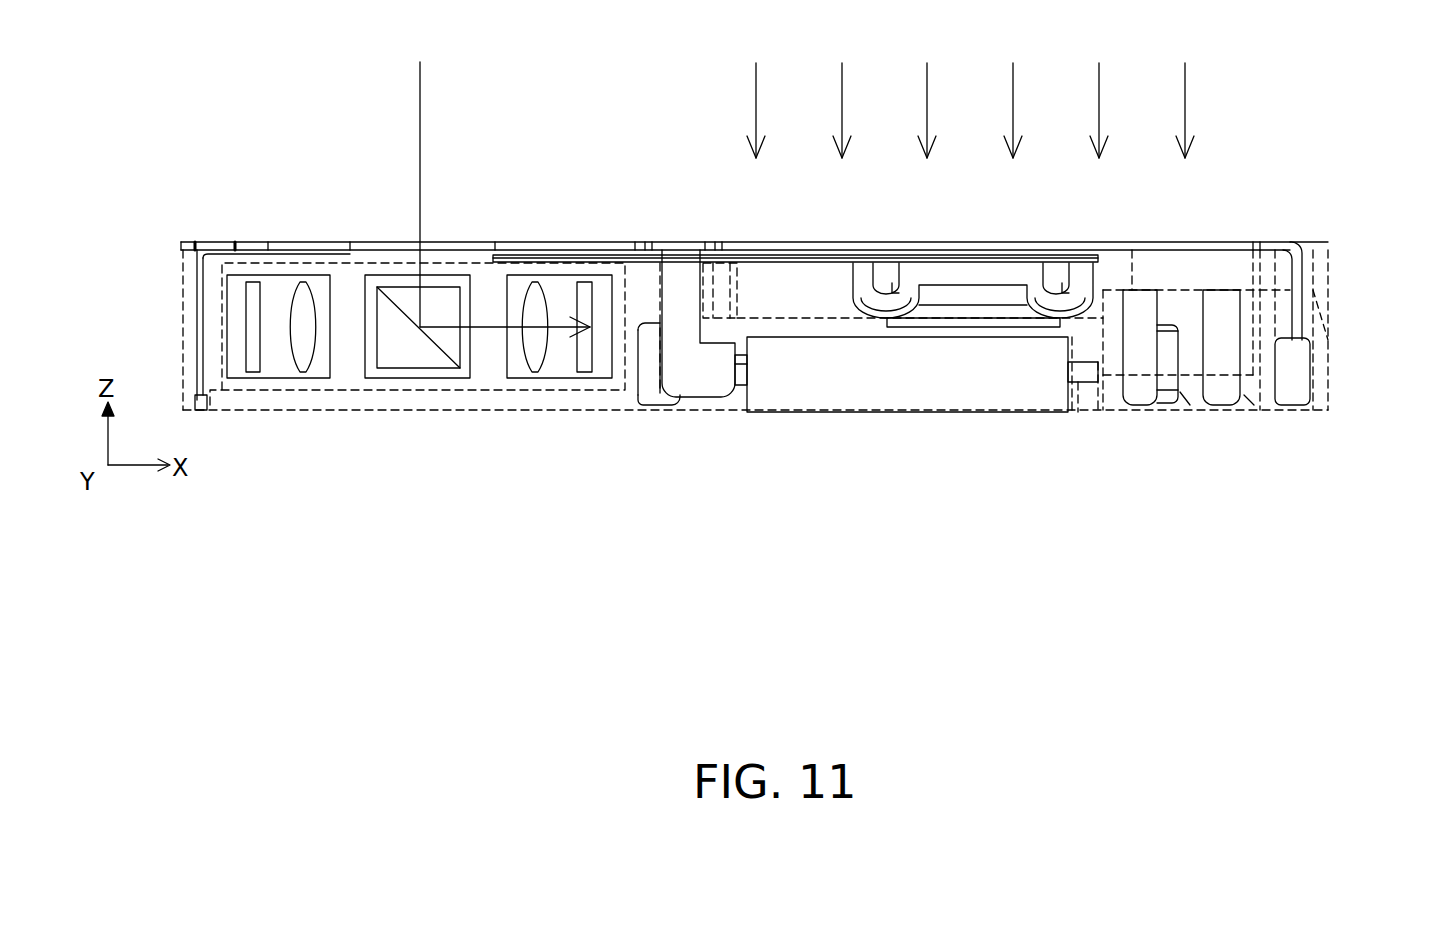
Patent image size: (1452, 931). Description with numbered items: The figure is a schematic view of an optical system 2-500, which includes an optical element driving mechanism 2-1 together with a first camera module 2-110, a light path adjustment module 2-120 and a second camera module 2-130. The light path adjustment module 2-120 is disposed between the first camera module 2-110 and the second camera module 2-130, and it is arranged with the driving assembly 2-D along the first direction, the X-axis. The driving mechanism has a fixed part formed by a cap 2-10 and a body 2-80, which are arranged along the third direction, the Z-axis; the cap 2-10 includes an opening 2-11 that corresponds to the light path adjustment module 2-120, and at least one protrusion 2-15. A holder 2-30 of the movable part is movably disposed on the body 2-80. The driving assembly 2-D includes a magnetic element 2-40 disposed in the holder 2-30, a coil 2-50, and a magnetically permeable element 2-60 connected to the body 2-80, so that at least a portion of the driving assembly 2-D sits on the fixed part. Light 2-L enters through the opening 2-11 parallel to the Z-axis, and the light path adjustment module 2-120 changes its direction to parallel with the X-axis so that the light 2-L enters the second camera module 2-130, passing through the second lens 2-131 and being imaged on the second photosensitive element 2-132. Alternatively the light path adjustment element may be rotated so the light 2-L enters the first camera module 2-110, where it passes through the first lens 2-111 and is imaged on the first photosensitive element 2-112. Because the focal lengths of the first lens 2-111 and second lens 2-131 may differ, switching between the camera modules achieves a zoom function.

The optical system 2-500 is at (180, 54).
The cap 2-10 is at (1240, 242).
The opening 2-11 is at (380, 242).
The light 2-L is at (420, 96).
The first camera module 2-110 is at (280, 275).
The first lens 2-111 is at (302, 378).
The first photosensitive element 2-112 is at (253, 378).
The light path adjustment module 2-120 is at (445, 275).
The second camera module 2-130 is at (556, 275).
The second lens 2-131 is at (535, 378).
The second photosensitive element 2-132 is at (584, 378).
The optical element driving mechanism 2-1 is at (1124, 238).
The protrusion 2-15 is at (712, 385).
The holder 2-30 is at (1030, 275).
The magnetic element 2-40 is at (958, 298).
The coil 2-50 is at (906, 395).
The magnetically permeable element 2-60 is at (1090, 382).
The body 2-80 is at (1340, 313).
The driving assembly 2-D is at (1356, 65).